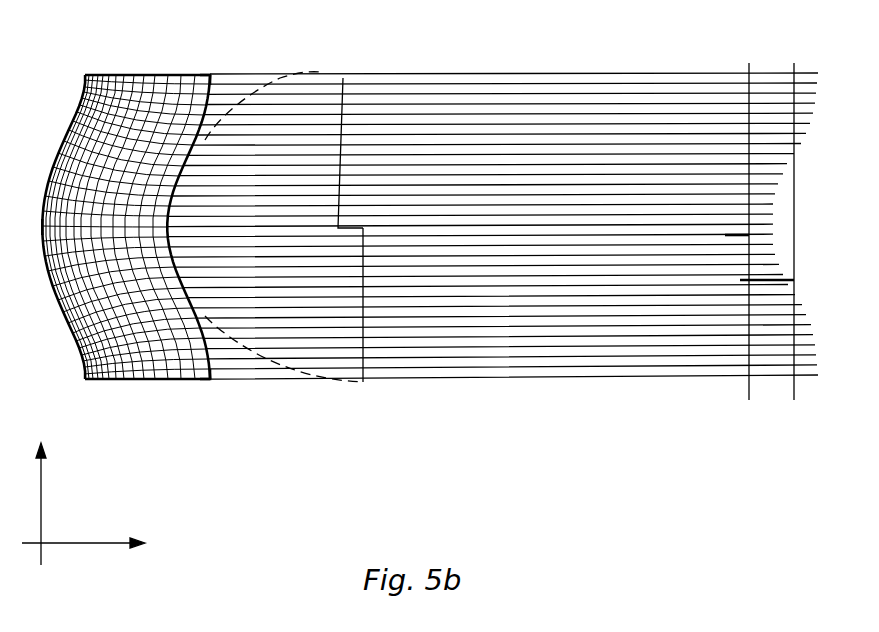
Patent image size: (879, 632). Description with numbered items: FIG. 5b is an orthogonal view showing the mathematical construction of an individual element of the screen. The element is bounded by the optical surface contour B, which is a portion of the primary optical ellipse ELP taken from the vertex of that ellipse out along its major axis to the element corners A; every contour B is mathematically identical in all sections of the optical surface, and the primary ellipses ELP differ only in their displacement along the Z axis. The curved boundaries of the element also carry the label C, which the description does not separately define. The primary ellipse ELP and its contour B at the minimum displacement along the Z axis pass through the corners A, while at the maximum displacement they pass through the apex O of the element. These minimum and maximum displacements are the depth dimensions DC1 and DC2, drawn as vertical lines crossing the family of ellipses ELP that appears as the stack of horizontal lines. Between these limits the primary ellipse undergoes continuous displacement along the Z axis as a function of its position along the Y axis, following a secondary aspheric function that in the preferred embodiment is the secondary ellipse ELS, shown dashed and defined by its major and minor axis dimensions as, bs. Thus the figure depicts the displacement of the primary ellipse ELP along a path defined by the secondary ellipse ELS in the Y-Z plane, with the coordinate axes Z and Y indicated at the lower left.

The optical surface contour B is at (119, 78).
The curved refracting surfaces of lens element C is at (207, 97).
The element corners A is at (209, 75).
The apex O is at (42, 227).
The secondary ellipse ELS is at (293, 77).
The major axis dimension of secondary ellipse as is at (343, 78).
The minor axis dimension of secondary ellipse bs is at (363, 360).
The primary optical ellipse ELP is at (520, 57).
The depth dimension DC1 is at (754, 83).
The depth dimension DC2 is at (746, 235).
The Z-axis Z is at (75, 542).
The Y-axis Y is at (39, 517).